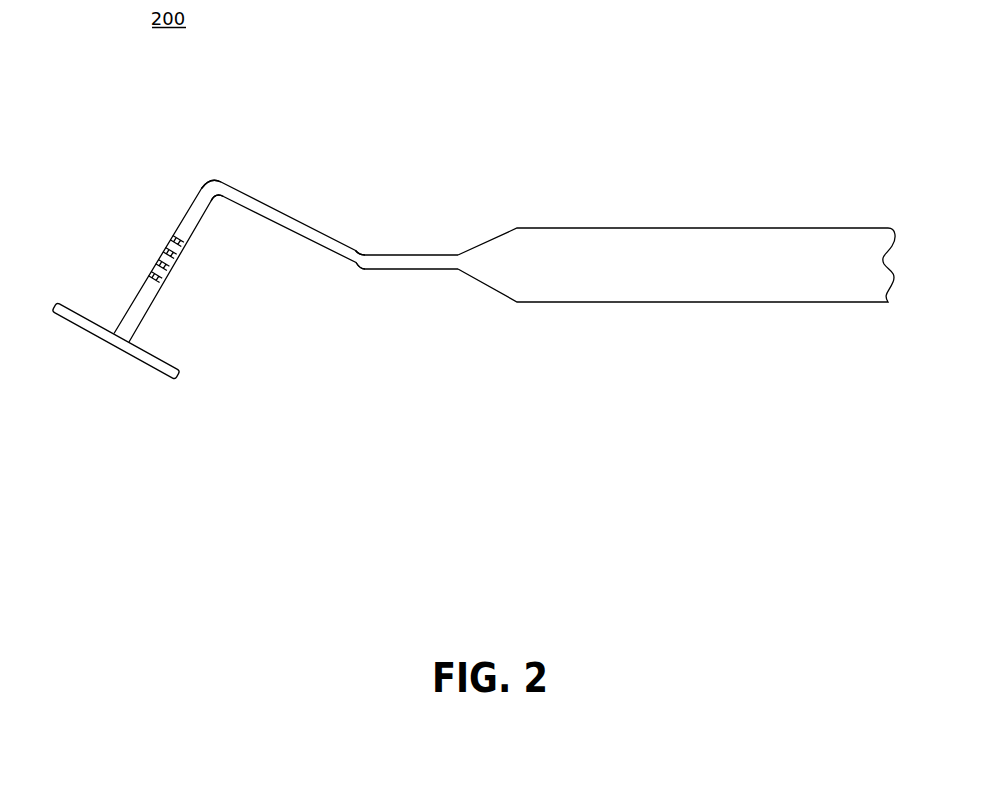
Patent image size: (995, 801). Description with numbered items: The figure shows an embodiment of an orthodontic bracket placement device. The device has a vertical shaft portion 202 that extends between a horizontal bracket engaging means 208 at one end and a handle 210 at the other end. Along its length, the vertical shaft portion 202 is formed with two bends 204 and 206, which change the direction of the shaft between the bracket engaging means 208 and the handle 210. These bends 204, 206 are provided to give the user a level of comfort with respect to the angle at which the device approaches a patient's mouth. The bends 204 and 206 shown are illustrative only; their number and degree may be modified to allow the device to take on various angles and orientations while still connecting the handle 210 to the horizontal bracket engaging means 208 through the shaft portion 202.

The vertical shaft portion 202 is at (155, 302).
The bend 204 is at (217, 179).
The bend 206 is at (362, 253).
The horizontal bracket engaging means 208 is at (75, 316).
The handle 210 is at (627, 288).